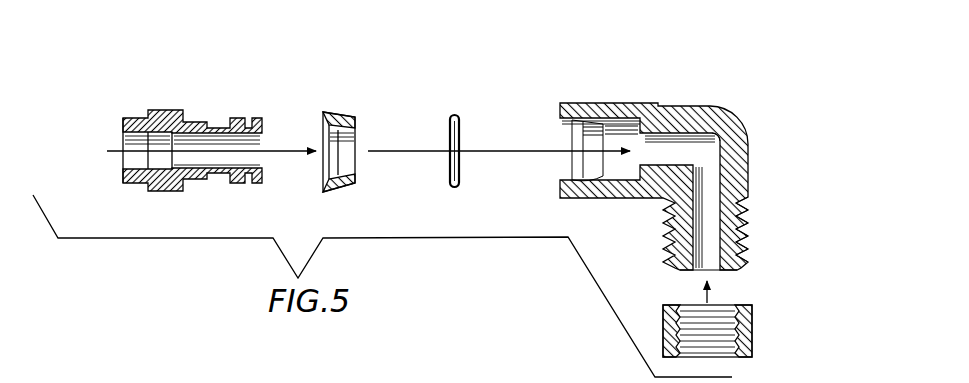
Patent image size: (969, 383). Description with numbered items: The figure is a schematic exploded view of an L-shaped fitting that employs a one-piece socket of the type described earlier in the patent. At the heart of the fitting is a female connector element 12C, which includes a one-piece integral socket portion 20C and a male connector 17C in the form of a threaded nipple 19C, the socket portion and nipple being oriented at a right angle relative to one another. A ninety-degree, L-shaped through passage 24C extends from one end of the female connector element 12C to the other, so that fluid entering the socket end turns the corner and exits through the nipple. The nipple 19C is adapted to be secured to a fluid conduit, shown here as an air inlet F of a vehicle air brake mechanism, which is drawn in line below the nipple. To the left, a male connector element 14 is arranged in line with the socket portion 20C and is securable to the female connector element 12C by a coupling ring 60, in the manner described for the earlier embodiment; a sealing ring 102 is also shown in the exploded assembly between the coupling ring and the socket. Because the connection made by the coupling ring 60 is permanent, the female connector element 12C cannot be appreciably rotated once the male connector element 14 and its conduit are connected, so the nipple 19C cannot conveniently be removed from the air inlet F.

The male connector element 14 is at (196, 109).
The coupling ring 60 is at (347, 108).
The O-ring seal 102 is at (453, 113).
The female connector element 12C is at (626, 100).
The one-piece integral socket portion 20C is at (590, 137).
The L-shaped through passage 24C is at (704, 146).
The male connector 17C is at (752, 219).
The threaded nipple 19C is at (740, 256).
The air inlet F is at (760, 337).